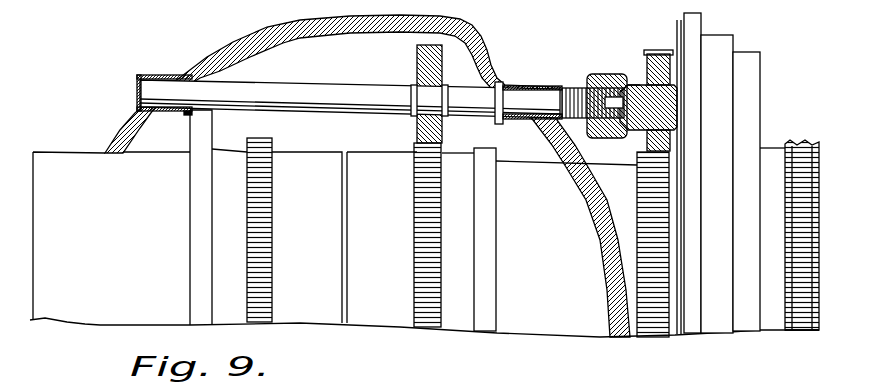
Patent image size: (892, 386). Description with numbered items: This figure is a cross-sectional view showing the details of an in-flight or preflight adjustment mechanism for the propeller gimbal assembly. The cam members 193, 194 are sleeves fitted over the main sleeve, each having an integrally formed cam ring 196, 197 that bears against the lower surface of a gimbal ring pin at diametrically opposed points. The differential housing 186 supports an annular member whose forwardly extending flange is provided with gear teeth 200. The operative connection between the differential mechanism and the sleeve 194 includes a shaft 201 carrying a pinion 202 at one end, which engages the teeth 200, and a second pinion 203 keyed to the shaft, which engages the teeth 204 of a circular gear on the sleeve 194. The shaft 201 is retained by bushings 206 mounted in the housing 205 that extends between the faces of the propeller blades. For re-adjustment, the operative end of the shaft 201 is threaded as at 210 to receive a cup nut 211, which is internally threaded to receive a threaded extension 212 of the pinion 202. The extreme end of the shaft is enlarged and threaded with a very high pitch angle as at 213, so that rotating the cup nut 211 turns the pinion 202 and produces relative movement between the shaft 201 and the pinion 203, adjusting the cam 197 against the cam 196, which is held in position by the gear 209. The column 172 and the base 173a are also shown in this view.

The support column 172 is at (789, 222).
The base plate 173a is at (802, 315).
The differential housing 186 is at (712, 38).
The cam member 193 is at (320, 163).
The cam member 194 is at (372, 165).
The cam ring 196 is at (200, 233).
The cam ring 197 is at (491, 158).
The gear teeth 200 is at (602, 216).
The shaft 201 is at (290, 86).
The pinion 202 is at (662, 52).
The second pinion 203 is at (428, 62).
The teeth 204 is at (428, 236).
The housing 205 is at (253, 40).
The bushing 206 is at (160, 77).
The gear 209 is at (260, 287).
The threaded portion 210 is at (567, 87).
The cup nut 211 is at (595, 77).
The threaded extension 212 is at (635, 82).
The enlarged threaded portion 213 is at (660, 108).